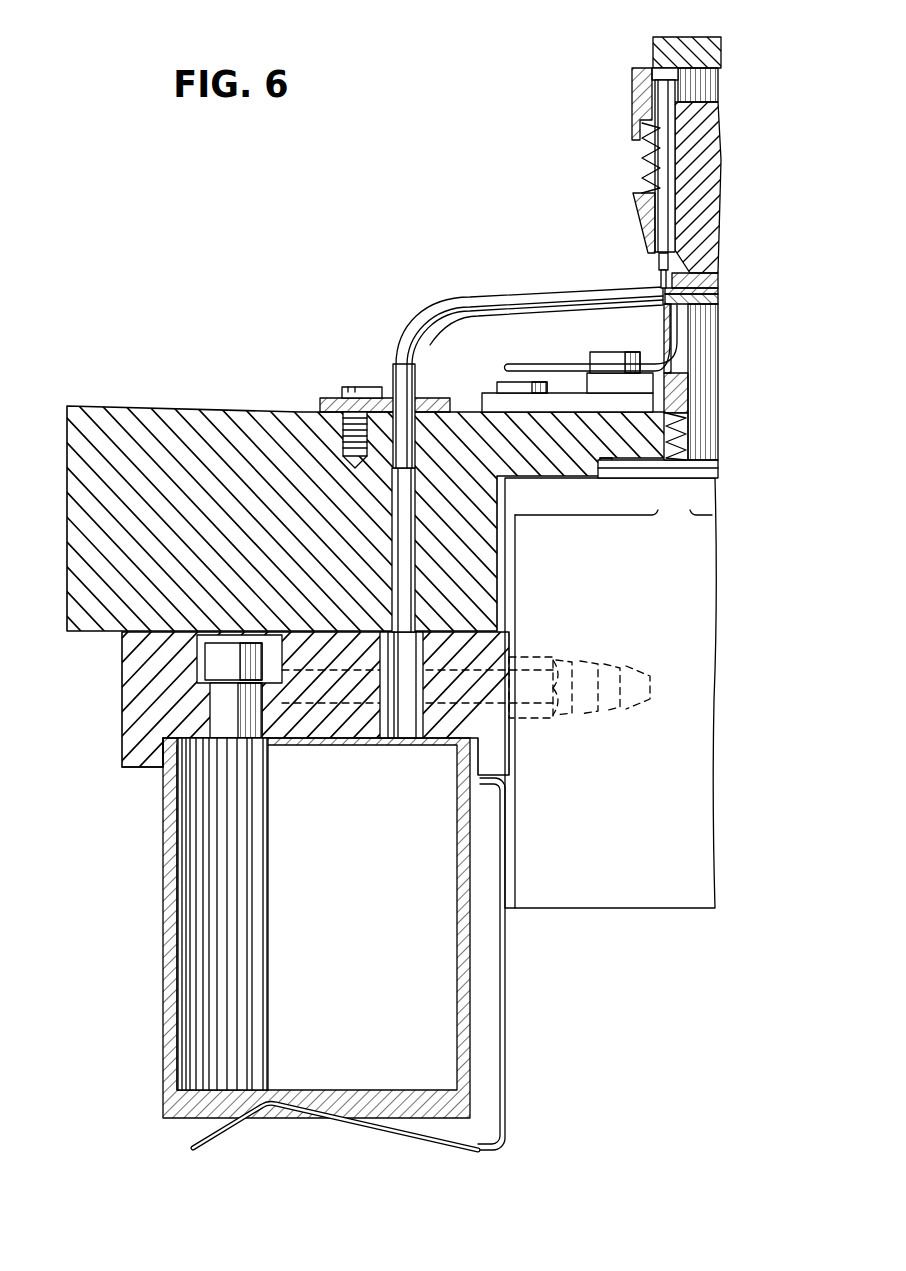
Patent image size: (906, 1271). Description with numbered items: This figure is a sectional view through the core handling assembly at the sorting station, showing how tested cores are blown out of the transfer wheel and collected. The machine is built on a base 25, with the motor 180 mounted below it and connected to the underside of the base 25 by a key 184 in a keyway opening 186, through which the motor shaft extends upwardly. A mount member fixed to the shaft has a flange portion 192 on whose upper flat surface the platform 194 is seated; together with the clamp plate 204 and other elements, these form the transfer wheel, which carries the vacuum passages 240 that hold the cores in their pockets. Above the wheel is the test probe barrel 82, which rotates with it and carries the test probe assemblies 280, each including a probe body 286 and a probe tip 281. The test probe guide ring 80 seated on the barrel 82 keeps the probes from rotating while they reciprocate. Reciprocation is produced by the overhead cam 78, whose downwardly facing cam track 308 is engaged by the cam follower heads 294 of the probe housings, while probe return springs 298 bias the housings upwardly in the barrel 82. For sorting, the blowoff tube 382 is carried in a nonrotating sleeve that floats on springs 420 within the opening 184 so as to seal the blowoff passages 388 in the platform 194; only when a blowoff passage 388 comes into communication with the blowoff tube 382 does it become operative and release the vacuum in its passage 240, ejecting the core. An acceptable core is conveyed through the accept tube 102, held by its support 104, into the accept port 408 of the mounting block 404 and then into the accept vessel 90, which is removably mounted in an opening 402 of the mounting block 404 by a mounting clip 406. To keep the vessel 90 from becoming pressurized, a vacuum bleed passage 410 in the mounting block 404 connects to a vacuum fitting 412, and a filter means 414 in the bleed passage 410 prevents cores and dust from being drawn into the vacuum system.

The base 25 is at (70, 535).
The overhead cam 78 is at (722, 47).
The test probe guide ring 80 is at (634, 90).
The test probe barrel 82 is at (718, 182).
The accept vessel 90 is at (165, 938).
The accept tube 102 is at (545, 297).
The accept tube support 104 is at (335, 400).
The motor 180 is at (700, 612).
The key 184 is at (718, 470).
The keyway opening 186 is at (606, 466).
The flange portion 192 is at (705, 340).
The platform 194 is at (712, 302).
The clamp plate 204 is at (715, 280).
The vacuum passage 240 is at (718, 292).
The test probe assembly 280 is at (658, 216).
The probe tip 281 is at (660, 280).
The probe body 286 is at (658, 262).
The cam follower head 294 is at (660, 68).
The probe return spring 298 is at (645, 165).
The cam track 308 is at (705, 75).
The blowoff tube 382 is at (568, 362).
The blowoff passage 388 is at (705, 320).
The opening 402 is at (163, 772).
The mounting block 404 is at (125, 720).
The mounting clip 406 is at (507, 985).
The accept port 408 is at (388, 742).
The vacuum bleed passage 410 is at (320, 700).
The vacuum fitting 412 is at (548, 722).
The filter means 414 is at (215, 650).
The springs 420 is at (690, 440).